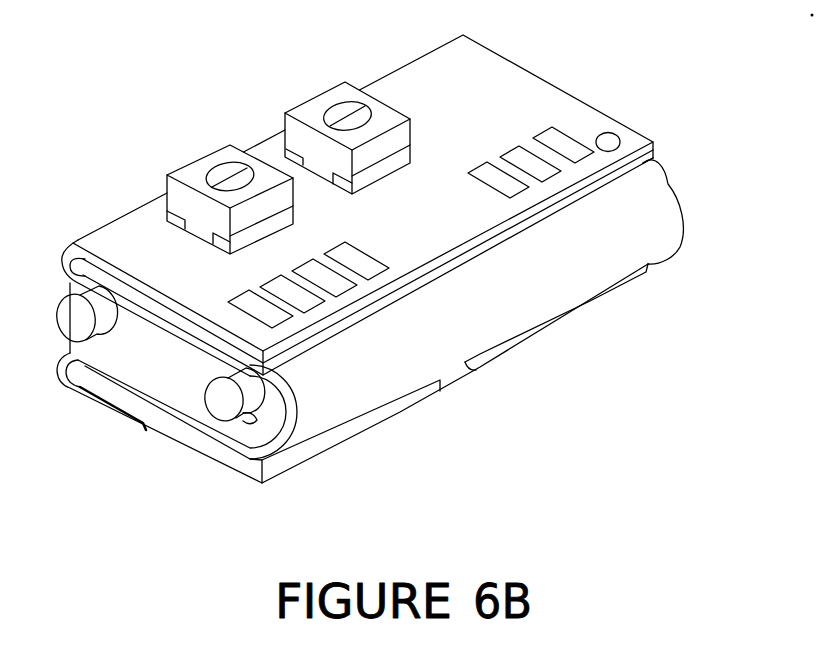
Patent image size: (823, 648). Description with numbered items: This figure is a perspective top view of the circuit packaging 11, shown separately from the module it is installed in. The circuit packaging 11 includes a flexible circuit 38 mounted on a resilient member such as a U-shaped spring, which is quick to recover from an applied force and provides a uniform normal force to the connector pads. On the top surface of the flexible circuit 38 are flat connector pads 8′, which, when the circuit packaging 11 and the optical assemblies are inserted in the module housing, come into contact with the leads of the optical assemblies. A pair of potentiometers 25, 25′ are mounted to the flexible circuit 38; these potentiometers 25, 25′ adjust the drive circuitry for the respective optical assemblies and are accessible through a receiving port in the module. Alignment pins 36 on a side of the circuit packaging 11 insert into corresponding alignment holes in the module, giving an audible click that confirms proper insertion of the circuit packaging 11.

The circuit packaging 11 is at (716, 252).
The flexible circuit 38 is at (513, 85).
The flat connector pads 8′ is at (567, 148).
The potentiometer 25 is at (313, 100).
The potentiometer 25′ is at (194, 160).
The alignment pins 36 is at (70, 320).